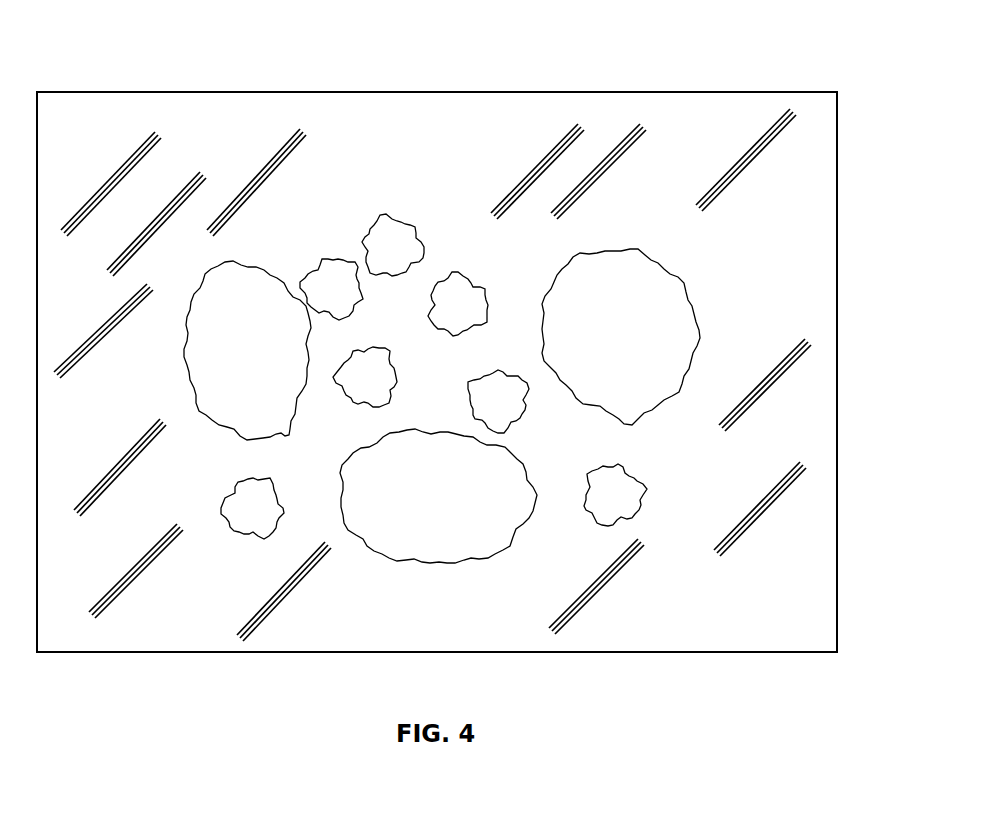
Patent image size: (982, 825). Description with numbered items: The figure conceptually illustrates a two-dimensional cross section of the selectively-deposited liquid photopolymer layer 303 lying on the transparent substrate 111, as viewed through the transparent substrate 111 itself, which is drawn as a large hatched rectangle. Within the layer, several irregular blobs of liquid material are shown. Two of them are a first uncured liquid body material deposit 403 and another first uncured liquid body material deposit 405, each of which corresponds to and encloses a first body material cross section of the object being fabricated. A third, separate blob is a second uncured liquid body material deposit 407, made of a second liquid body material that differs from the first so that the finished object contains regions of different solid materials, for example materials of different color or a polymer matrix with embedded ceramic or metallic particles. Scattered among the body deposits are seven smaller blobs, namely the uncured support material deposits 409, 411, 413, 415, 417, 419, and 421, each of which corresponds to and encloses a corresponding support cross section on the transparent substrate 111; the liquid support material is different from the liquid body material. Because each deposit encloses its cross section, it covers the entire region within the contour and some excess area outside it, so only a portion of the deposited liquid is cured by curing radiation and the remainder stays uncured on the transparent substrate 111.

The transparent substrate 111 is at (782, 92).
The selectively-deposited liquid photopolymer layer 303 is at (711, 680).
The first uncured liquid body material deposit 403 is at (648, 295).
The first uncured liquid body material deposit 405 is at (500, 497).
The second uncured liquid body material deposit 407 is at (217, 389).
The uncured support material deposit 409 is at (243, 512).
The uncured support material deposit 411 is at (322, 290).
The uncured support material deposit 413 is at (377, 238).
The uncured support material deposit 415 is at (450, 288).
The uncured support material deposit 417 is at (371, 368).
The uncured support material deposit 419 is at (493, 412).
The uncured support material deposit 421 is at (628, 490).